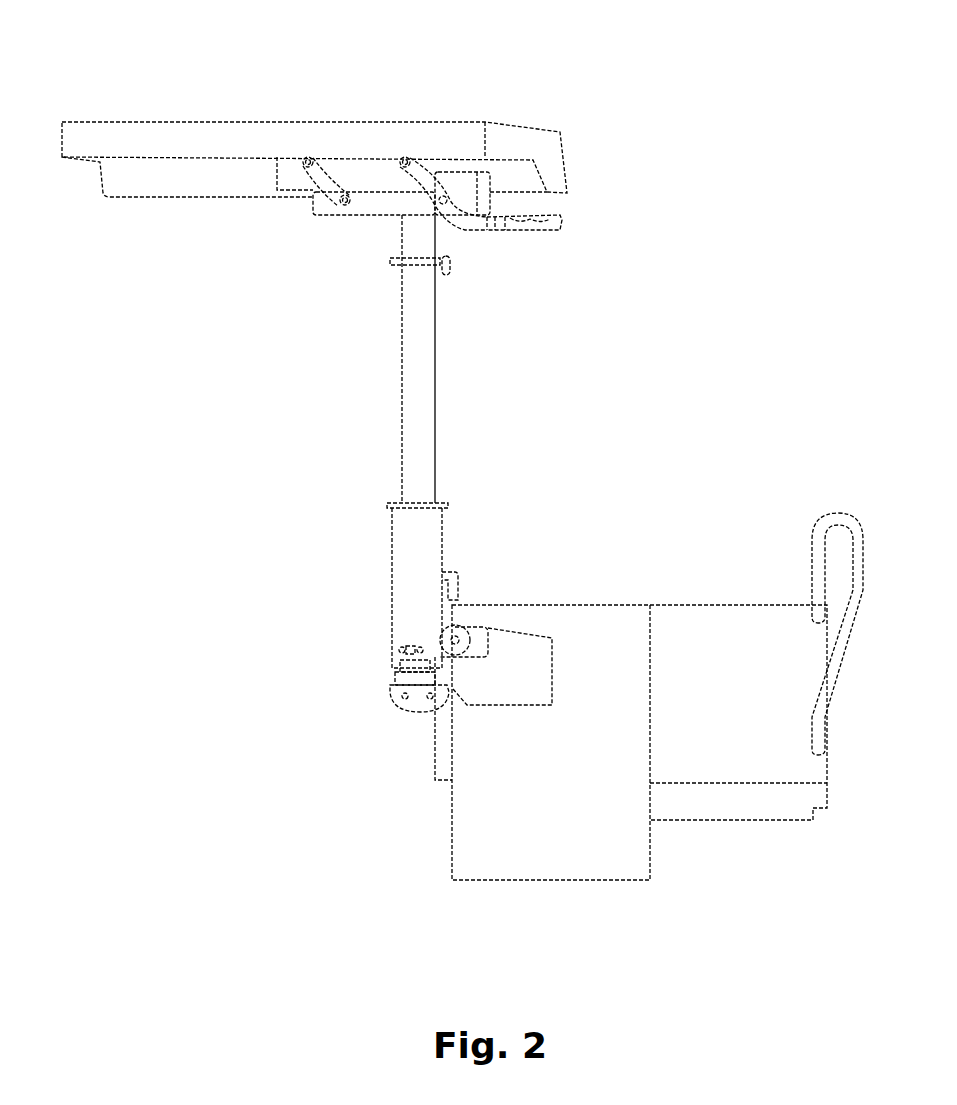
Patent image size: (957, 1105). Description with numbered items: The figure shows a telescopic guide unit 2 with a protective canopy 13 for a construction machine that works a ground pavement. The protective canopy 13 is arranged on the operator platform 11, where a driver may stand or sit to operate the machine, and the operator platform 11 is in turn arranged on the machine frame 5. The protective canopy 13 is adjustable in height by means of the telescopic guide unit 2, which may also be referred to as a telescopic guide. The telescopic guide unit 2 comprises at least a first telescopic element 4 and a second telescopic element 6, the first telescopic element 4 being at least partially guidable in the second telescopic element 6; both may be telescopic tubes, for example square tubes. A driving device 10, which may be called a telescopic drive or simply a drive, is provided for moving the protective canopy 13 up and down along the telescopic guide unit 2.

The telescopic guide unit 2 is at (486, 387).
The protective canopy 13 is at (300, 92).
The first telescopic element 4 is at (418, 390).
The second telescopic element 6 is at (407, 585).
The driving device 10 is at (466, 694).
The machine frame 5 is at (466, 912).
The operator platform 11 is at (796, 465).